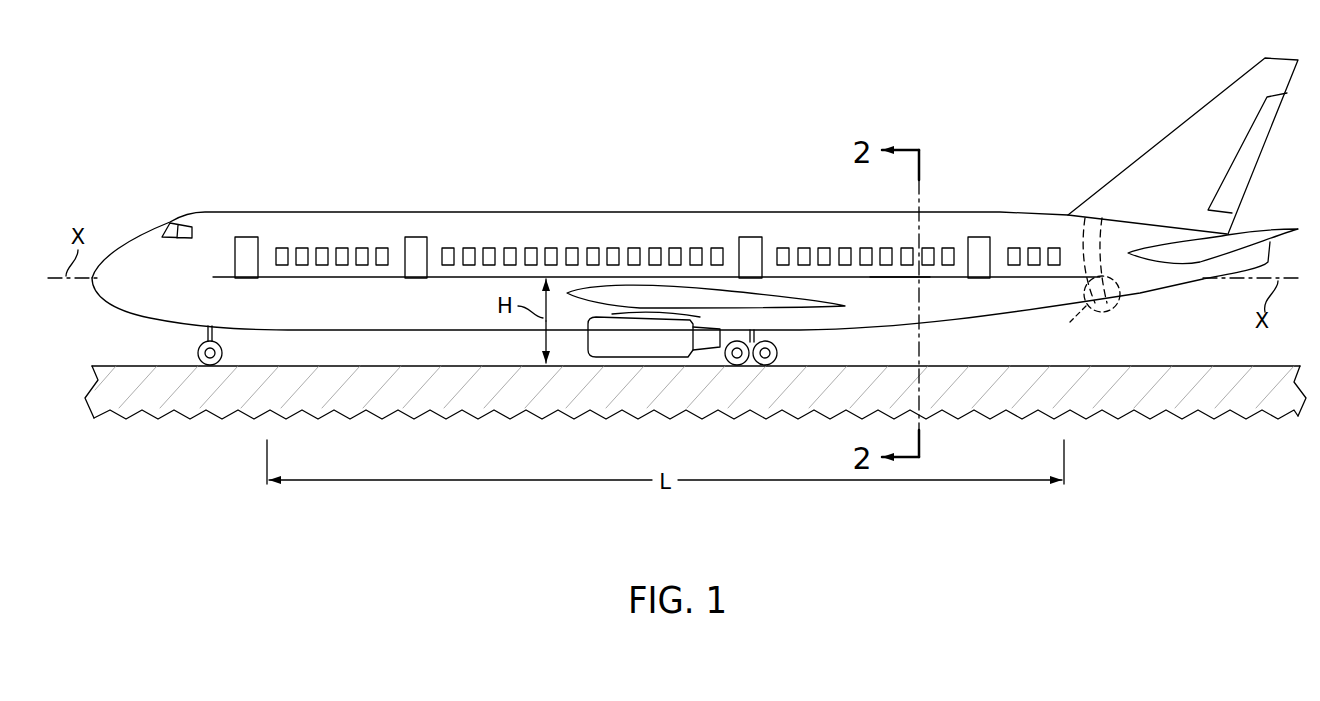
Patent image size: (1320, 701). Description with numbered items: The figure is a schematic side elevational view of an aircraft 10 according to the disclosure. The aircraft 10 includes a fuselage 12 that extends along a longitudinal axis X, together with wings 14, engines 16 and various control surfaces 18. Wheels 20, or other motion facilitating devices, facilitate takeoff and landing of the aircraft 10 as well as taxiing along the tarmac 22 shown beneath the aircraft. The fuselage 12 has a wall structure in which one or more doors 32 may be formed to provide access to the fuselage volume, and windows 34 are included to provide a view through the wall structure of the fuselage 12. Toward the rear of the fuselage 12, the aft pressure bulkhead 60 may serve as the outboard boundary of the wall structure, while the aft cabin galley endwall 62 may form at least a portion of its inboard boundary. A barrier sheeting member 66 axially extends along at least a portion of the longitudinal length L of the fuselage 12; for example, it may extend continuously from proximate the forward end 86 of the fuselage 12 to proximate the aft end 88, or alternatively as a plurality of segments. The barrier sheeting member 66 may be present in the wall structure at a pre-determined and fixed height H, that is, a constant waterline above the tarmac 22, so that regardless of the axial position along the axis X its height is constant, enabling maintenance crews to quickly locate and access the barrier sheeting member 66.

The aircraft 10 is at (700, 240).
The fuselage 12 is at (647, 212).
The wings 14 is at (674, 297).
The engines 16 is at (635, 350).
The control surfaces 18 is at (1255, 148).
The wheels 20 is at (223, 352).
The tarmac 22 is at (1208, 364).
The doors 32 is at (246, 237).
The windows 34 is at (341, 248).
The aft pressure bulkhead 60 is at (1120, 300).
The aft cabin galley endwall 62 is at (1062, 322).
The barrier sheeting member 66 is at (901, 277).
The forward end 86 is at (161, 193).
The aft end 88 is at (1094, 176).